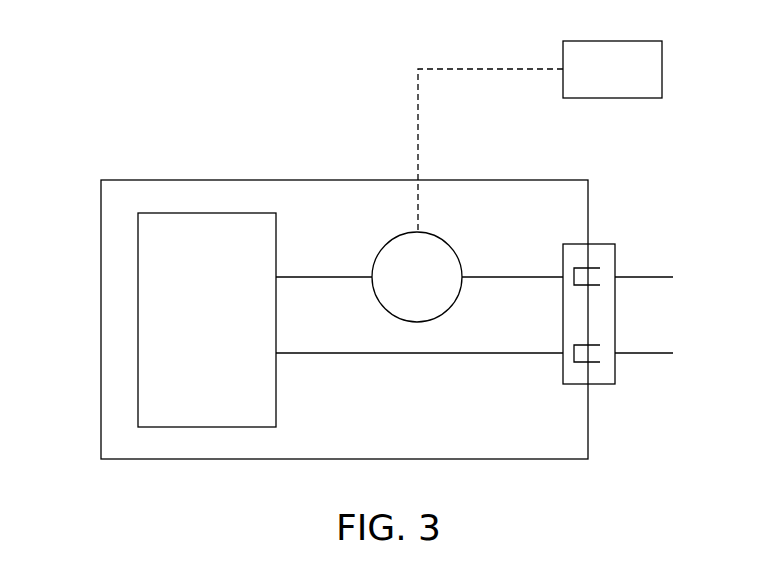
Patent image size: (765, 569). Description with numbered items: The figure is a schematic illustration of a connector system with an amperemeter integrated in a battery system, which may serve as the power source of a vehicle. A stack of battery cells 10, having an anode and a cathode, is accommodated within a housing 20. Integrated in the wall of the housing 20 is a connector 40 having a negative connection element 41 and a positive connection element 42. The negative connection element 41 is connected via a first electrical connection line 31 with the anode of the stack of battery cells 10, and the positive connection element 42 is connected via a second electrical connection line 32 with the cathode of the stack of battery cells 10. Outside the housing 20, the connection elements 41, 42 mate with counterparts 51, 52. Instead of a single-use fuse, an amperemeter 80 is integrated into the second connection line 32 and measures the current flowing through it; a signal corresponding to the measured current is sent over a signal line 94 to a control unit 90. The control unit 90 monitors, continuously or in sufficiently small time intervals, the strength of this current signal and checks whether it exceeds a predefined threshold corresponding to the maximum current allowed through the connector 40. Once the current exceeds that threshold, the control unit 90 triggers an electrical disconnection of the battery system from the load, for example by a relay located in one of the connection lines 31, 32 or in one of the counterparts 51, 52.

The stack of battery cells 10 is at (138, 320).
The housing 20 is at (181, 179).
The first electrical connection line 31 is at (344, 355).
The second electrical connection line 32 is at (521, 276).
The connector 40 is at (562, 371).
The negative connection element 41 is at (586, 362).
The positive connection element 42 is at (588, 268).
The counterpart of negative connection element 51 is at (660, 355).
The counterpart of positive connection element 52 is at (652, 276).
The amperemeter 80 is at (385, 243).
The control unit 90 is at (662, 70).
The signal line between amperemeter and control unit 94 is at (507, 72).